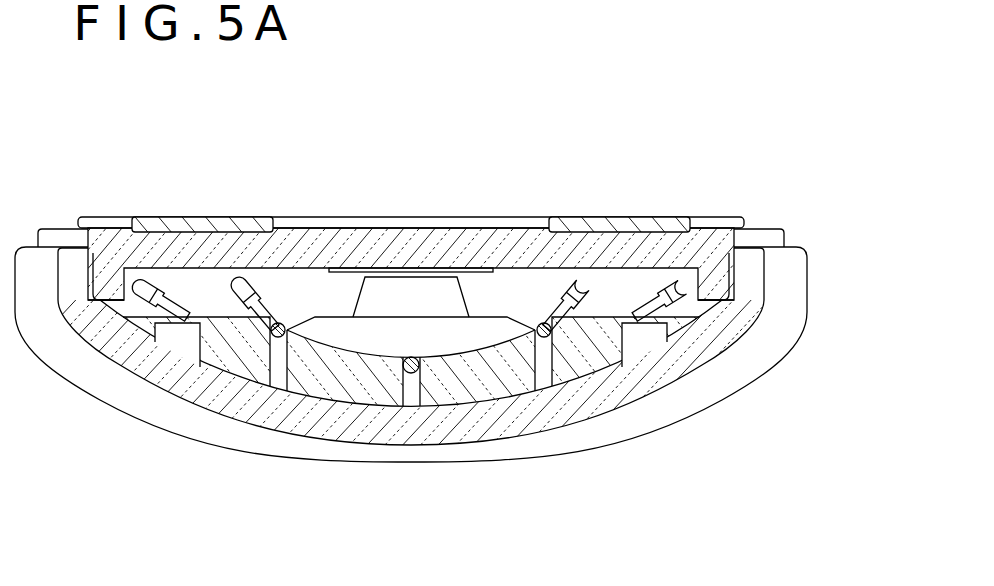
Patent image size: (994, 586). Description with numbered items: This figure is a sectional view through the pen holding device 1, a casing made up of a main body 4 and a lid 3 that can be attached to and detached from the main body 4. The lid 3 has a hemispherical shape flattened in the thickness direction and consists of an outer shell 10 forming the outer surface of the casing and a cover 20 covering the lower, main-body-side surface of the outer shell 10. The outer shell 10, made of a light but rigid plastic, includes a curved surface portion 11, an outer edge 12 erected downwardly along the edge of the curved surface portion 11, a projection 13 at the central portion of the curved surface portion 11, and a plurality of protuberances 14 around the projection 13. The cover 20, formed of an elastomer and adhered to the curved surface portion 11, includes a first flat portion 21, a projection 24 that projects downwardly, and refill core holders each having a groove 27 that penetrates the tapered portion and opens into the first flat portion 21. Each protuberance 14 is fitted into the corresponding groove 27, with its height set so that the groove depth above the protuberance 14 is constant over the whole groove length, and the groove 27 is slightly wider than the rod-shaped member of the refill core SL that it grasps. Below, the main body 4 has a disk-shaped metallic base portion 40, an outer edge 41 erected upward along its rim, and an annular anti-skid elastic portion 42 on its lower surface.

The pen holding device 1 is at (697, 132).
The lid 3 is at (727, 378).
The main body 4 is at (423, 236).
The outer shell 10 is at (786, 325).
The curved surface portion 11 is at (669, 375).
The outer edge 12 is at (750, 275).
The projection 13 is at (428, 303).
The protuberances 14 is at (411, 374).
The cover 20 is at (603, 368).
The first flat portion 21 is at (221, 306).
The projection 24 is at (482, 332).
The groove 27 is at (411, 385).
The base portion 40 is at (508, 233).
The outer edge 41 is at (110, 270).
The elastic portion 42 is at (611, 221).
The refill core SL is at (411, 352).